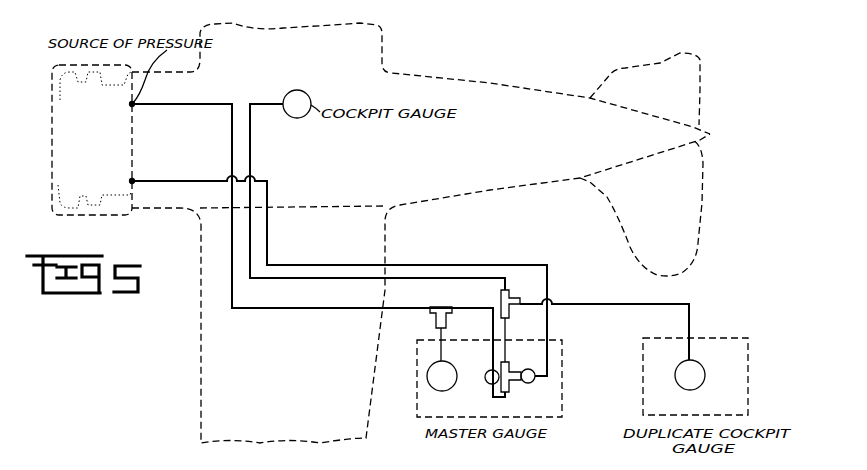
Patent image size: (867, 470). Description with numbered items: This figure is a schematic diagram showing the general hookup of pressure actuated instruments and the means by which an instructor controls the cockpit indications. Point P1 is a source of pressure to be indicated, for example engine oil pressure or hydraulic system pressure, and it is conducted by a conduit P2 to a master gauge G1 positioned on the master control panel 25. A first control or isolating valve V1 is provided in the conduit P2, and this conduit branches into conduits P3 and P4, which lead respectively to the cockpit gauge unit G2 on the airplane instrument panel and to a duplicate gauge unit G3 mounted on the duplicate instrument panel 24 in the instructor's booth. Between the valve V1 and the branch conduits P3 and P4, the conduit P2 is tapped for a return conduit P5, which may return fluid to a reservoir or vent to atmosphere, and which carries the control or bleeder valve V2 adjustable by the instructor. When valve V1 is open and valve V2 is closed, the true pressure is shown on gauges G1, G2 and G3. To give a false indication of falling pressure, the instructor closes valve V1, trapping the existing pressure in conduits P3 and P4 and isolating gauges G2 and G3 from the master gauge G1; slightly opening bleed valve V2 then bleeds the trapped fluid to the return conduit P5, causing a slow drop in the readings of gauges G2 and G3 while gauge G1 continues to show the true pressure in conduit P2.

The source of pressure P1 is at (136, 106).
The conduit P2 is at (275, 309).
The conduit P3 is at (444, 280).
The conduit P4 is at (598, 305).
The return conduit P5 is at (535, 265).
The master gauge G1 is at (446, 384).
The cockpit gauge unit G2 is at (292, 116).
The duplicate gauge unit G3 is at (703, 379).
The control or isolating valve V1 is at (488, 382).
The control or bleeder valve V2 is at (528, 384).
The duplicate instrument panel 24 is at (748, 346).
The master control panel 25 is at (562, 367).